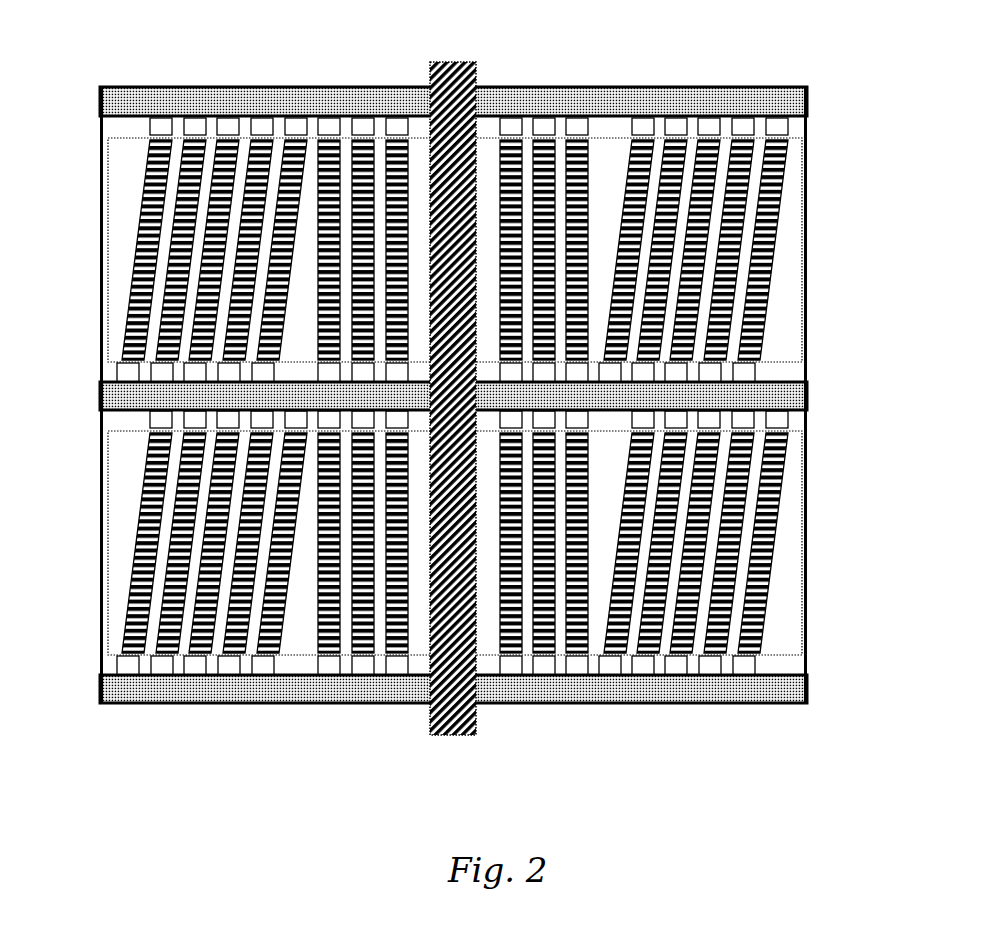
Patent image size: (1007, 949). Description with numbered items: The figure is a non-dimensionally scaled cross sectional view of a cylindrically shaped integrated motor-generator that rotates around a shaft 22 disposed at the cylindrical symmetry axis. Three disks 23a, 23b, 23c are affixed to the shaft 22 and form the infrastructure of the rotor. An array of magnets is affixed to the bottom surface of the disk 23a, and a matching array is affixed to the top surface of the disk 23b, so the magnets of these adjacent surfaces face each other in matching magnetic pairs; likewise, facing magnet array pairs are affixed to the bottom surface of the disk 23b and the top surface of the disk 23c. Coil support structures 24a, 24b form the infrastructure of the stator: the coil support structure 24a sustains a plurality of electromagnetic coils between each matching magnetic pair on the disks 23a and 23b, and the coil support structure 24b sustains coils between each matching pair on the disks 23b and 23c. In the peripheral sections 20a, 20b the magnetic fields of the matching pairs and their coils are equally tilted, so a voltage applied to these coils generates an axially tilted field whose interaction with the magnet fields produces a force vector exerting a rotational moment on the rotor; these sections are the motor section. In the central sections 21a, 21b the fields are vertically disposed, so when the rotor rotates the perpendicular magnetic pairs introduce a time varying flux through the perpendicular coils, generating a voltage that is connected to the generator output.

The peripheral section 20a is at (298, 84).
The peripheral section 20b is at (785, 84).
The central section 21a is at (403, 84).
The central section 21b is at (585, 84).
The shaft 22 is at (452, 60).
The disk 23a is at (99, 101).
The disk 23b is at (100, 396).
The disk 23c is at (100, 688).
The coil support structure 24a is at (793, 256).
The coil support structure 24b is at (793, 546).